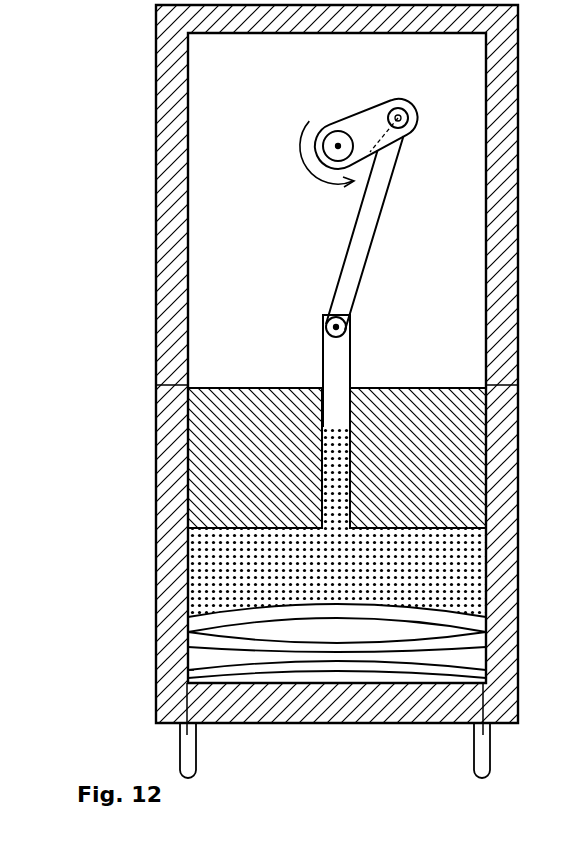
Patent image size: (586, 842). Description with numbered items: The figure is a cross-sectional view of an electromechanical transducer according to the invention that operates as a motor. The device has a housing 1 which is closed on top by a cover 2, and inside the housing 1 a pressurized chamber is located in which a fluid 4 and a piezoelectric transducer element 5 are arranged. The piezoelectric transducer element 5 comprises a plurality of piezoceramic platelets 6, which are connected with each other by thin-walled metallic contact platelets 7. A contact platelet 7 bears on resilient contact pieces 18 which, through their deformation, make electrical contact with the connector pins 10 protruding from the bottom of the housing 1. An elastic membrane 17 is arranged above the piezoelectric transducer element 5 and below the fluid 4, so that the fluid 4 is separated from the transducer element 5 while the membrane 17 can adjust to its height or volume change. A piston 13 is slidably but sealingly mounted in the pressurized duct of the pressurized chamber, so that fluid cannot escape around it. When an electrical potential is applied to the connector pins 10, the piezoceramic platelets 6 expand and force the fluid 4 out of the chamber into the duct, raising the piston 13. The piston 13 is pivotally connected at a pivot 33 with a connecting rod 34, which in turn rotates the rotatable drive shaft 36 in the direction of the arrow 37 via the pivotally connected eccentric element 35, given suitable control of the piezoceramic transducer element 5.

The housing 1 is at (178, 487).
The cover 2 is at (227, 430).
The fluid 4 is at (462, 563).
The piezoelectric transducer element 5 is at (445, 674).
The piezoceramic platelets 6 is at (445, 648).
The contact platelets 7 is at (193, 670).
The connector pins 10 is at (188, 762).
The piston 13 is at (336, 366).
The membrane 17 is at (443, 611).
The contact pieces 18 is at (445, 702).
The pivot 33 is at (346, 327).
The connecting rod 34 is at (360, 240).
The eccentric element 35 is at (367, 135).
The rotatable drive shaft 36 is at (338, 146).
The arrow 37 is at (338, 147).